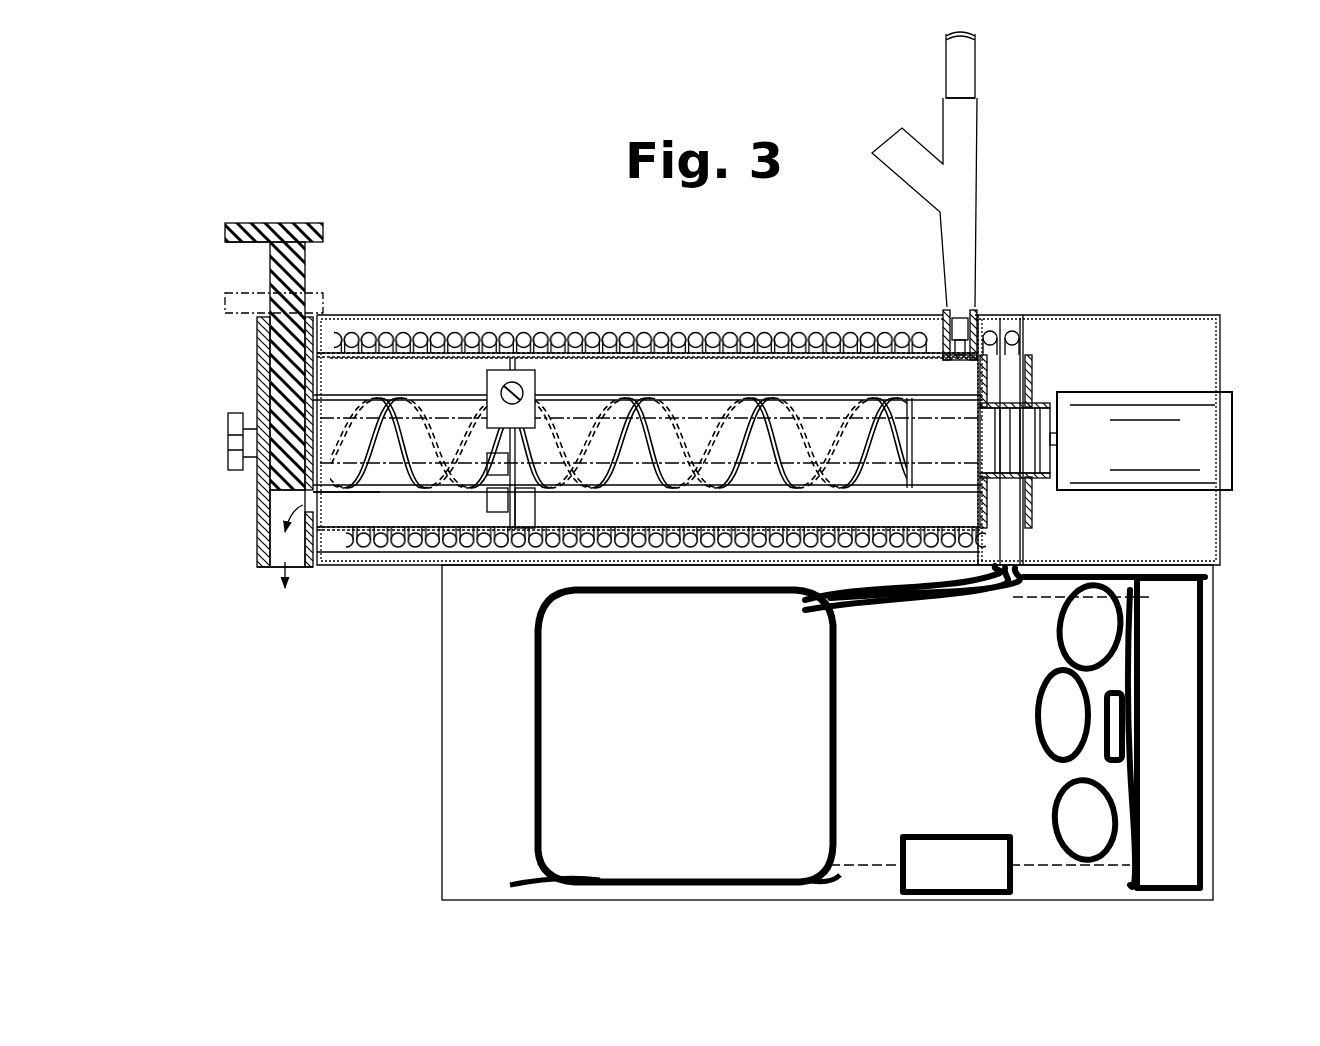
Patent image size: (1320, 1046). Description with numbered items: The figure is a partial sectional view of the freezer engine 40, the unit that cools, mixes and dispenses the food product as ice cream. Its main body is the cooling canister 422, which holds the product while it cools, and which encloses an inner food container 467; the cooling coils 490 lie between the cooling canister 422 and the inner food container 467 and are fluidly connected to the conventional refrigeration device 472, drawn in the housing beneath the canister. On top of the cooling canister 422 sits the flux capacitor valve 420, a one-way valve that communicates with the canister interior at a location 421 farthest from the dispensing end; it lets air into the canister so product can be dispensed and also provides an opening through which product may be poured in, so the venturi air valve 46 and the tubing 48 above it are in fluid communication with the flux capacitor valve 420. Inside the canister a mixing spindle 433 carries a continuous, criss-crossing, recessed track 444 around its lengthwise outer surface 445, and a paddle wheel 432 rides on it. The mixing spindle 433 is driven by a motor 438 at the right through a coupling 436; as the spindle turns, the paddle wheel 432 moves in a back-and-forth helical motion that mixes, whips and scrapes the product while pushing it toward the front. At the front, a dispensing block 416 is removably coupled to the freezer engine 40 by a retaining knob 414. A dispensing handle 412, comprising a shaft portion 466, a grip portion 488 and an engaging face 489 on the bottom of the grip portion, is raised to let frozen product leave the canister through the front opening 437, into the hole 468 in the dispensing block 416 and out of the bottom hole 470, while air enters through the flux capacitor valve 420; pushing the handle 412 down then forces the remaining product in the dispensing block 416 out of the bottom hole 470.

The freezer engine 40 is at (1140, 232).
The venturi air valve 46 is at (983, 185).
The tubing 48 is at (978, 60).
The dispensing handle 412 is at (232, 203).
The retaining knob 414 is at (233, 413).
The dispensing block 416 is at (255, 504).
The flux capacitor valve 420 is at (963, 304).
The location farthest away from dispensing block 421 is at (985, 312).
The cooling canister 422 is at (396, 317).
The paddle wheel 432 is at (556, 382).
The mixing spindle 433 is at (683, 383).
The coupling 436 is at (1055, 442).
The front opening 437 is at (305, 495).
The motor 438 is at (1190, 444).
The recessed track 444 is at (630, 392).
The lengthwise outer surface 445 is at (448, 397).
The shaft portion 466 is at (306, 272).
The inner food container 467 is at (810, 333).
The hole 468 is at (308, 503).
The bottom hole 470 is at (276, 568).
The conventional refrigeration device 472 is at (548, 715).
The grip portion 488 is at (312, 222).
The engaging face 489 is at (238, 245).
The cooling coils 490 is at (797, 362).